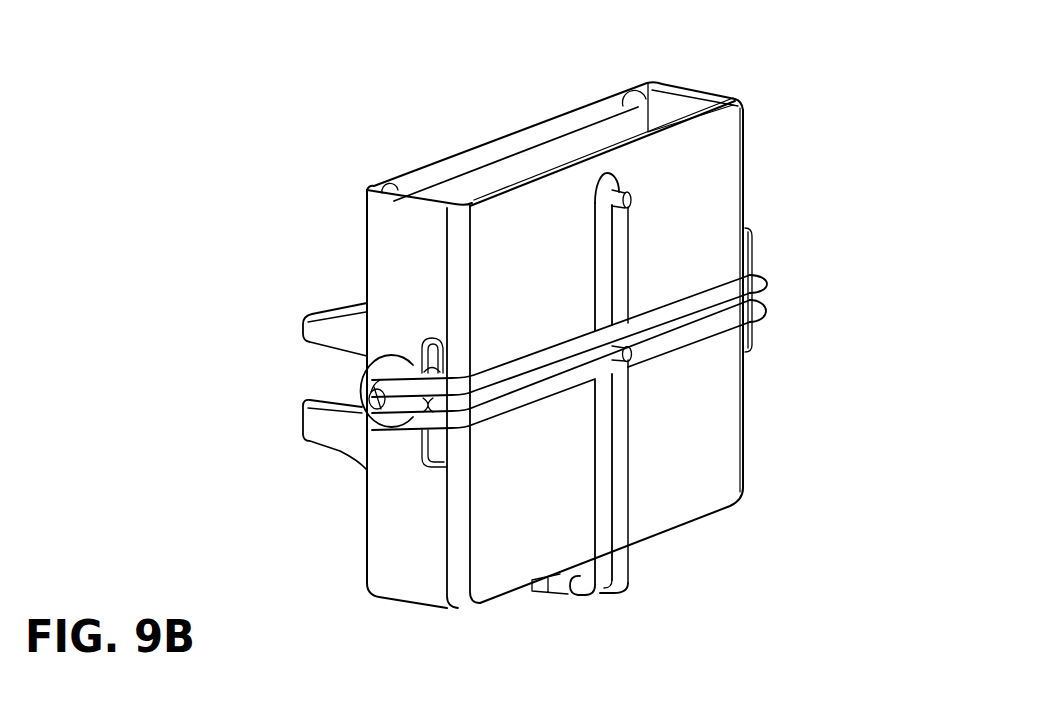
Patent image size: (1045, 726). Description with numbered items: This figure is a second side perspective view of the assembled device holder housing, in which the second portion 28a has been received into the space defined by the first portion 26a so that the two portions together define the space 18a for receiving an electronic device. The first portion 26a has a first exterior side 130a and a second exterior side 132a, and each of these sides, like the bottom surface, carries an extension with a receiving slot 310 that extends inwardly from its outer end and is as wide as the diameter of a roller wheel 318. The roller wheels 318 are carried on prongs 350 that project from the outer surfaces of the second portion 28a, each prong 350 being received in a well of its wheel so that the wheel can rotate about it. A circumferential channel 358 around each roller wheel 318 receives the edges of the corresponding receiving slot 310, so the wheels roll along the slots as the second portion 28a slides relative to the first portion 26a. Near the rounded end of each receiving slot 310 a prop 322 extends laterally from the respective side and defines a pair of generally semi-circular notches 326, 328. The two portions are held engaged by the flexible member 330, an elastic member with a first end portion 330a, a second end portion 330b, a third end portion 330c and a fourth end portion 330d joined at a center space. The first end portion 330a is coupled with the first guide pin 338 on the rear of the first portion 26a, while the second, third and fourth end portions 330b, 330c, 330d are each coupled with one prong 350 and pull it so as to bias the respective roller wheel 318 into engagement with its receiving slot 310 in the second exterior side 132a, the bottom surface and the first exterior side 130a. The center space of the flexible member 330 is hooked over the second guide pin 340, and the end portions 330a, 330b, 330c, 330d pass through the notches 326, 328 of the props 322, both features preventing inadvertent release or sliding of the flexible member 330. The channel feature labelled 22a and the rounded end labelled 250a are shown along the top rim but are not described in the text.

The space 18a is at (574, 306).
The channel 22a is at (518, 158).
The first portion 26a is at (693, 487).
The second portion 28a is at (622, 103).
The first exterior side 130a is at (750, 452).
The second exterior side 132a is at (400, 540).
The rounded end 250a is at (455, 190).
The receiving slot 310 is at (307, 382).
The roller wheel 318 is at (376, 422).
The prop 322 is at (758, 253).
The notch 326 is at (770, 276).
The notch 328 is at (758, 339).
The flexible member 330 is at (551, 381).
The first end portion 330a is at (622, 178).
The second end portion 330b is at (370, 374).
The third end portion 330c is at (602, 595).
The fourth end portion 330d is at (762, 313).
The first guide pin 338 is at (633, 200).
The second guide pin 340 is at (633, 356).
The prong 350 is at (301, 430).
The circumferential channel 358 is at (417, 360).